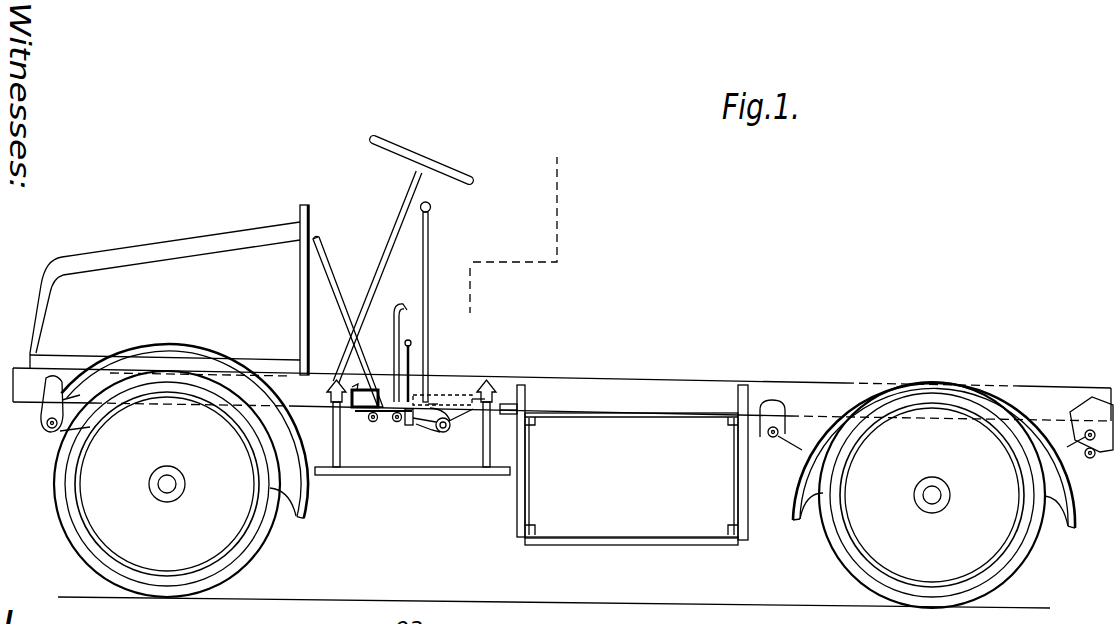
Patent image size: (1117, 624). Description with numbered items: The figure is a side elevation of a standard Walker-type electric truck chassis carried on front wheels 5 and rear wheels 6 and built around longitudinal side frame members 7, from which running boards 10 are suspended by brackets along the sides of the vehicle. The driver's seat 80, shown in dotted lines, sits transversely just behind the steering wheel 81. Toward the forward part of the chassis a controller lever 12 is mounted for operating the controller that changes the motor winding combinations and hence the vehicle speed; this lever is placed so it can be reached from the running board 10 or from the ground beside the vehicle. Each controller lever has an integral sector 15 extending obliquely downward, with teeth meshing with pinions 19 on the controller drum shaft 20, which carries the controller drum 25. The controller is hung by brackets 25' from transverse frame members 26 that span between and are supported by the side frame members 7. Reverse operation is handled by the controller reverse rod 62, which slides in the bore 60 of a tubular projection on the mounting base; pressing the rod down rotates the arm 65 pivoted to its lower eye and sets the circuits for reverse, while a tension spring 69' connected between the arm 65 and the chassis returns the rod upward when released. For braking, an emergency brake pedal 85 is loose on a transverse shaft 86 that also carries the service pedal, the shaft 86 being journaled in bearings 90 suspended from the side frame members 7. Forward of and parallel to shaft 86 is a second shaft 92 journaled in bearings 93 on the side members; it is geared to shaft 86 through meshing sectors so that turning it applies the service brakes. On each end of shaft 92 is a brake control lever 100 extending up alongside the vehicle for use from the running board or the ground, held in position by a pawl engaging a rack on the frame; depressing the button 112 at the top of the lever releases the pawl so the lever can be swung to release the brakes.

The front wheels 5 is at (66, 500).
The rear wheels 6 is at (1012, 569).
The side frame members 7 is at (792, 381).
The running boards 10 is at (453, 473).
The controller lever 12 is at (430, 263).
The sector 15 is at (424, 420).
The pinions 19 is at (442, 433).
The controller drum shaft 20 is at (415, 428).
The controller drum 25 is at (454, 434).
The brackets 25' is at (457, 386).
The transverse frame members 26 is at (472, 395).
The bore 60 is at (407, 340).
The controller reverse rod 62 is at (411, 350).
The arm 65 is at (397, 423).
The tension spring 69' is at (461, 361).
The driver's seat 80 is at (533, 263).
The steering wheel 81 is at (438, 168).
The emergency brake pedal 85 is at (394, 318).
The transverse shaft 86 is at (393, 421).
The bearings 90 is at (388, 407).
The second shaft 92 is at (371, 422).
The bearings 93 is at (372, 419).
The brake control lever 100 is at (332, 279).
The button 112 is at (320, 238).